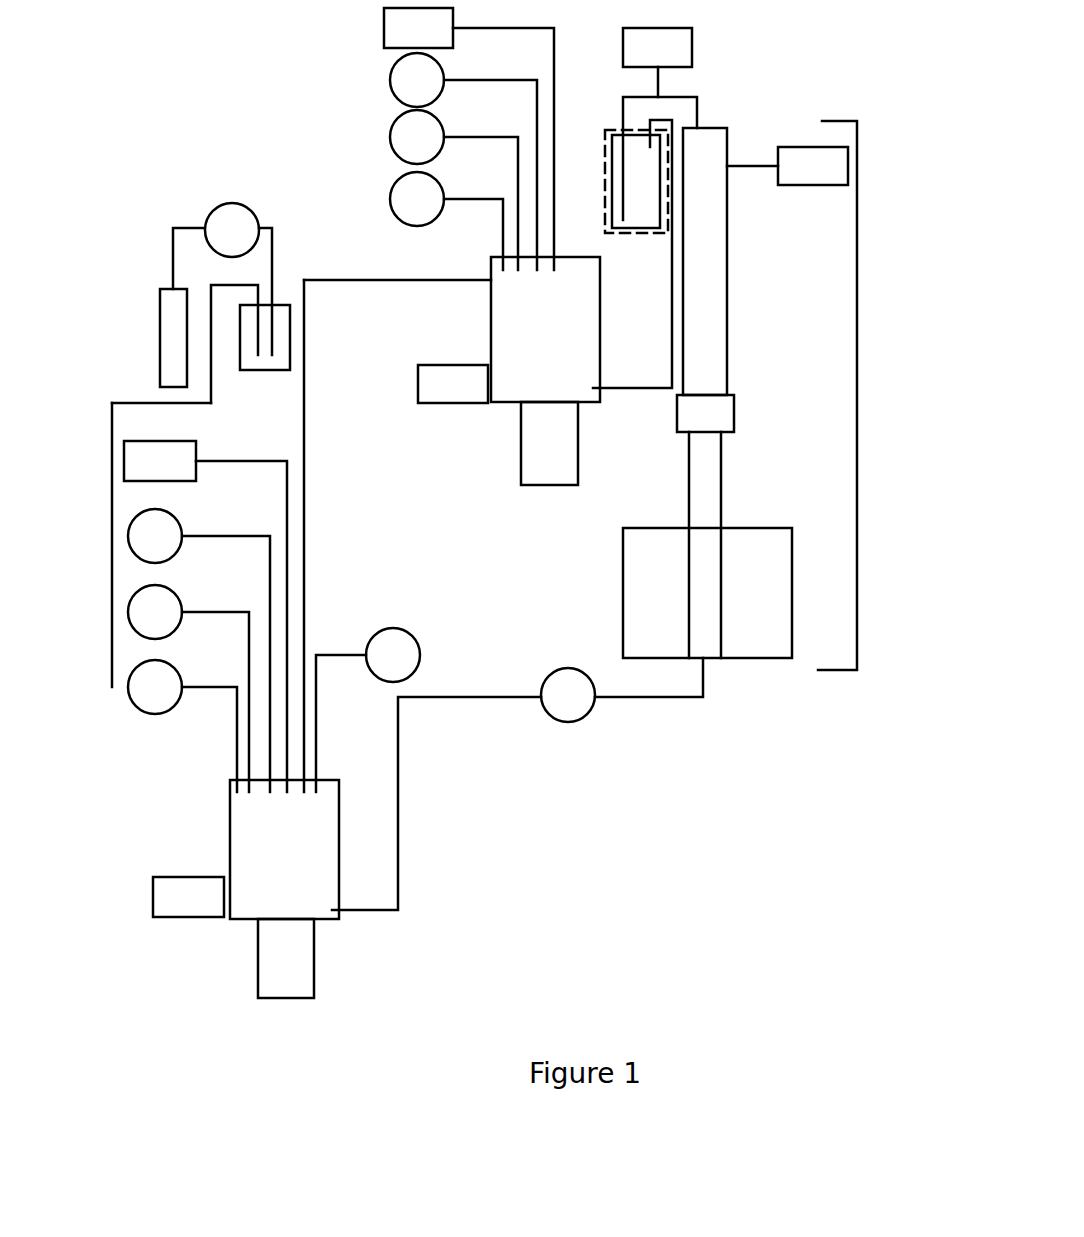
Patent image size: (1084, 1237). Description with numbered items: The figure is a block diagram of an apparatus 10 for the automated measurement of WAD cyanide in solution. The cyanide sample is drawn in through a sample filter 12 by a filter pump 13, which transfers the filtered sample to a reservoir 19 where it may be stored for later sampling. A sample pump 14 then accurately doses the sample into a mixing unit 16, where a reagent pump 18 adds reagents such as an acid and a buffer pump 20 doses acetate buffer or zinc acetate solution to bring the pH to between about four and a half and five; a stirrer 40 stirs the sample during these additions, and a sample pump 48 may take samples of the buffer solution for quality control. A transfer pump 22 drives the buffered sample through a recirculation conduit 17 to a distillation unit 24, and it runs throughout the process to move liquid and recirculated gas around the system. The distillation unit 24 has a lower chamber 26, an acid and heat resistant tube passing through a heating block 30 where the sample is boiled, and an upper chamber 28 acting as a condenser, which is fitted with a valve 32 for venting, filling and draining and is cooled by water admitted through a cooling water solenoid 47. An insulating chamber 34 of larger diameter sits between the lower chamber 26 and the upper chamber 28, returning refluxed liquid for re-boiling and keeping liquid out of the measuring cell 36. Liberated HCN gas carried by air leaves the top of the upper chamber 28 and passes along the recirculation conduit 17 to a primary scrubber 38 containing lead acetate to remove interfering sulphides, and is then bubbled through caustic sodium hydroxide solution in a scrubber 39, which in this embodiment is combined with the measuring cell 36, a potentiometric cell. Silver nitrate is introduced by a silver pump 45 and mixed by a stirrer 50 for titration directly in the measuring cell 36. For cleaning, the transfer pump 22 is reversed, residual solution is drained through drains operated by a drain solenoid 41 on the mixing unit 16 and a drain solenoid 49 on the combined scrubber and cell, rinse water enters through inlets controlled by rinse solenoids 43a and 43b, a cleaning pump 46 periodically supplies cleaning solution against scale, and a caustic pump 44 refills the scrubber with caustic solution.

The apparatus 10 is at (186, 97).
The sample filter 12 is at (182, 307).
The filter pump 13 is at (238, 279).
The sample pump 14 is at (182, 726).
The mixing unit 16 is at (284, 849).
The recirculation conduit 17 is at (363, 273).
The reagent pump 18 is at (199, 650).
The reservoir 19 is at (283, 355).
The buffer pump 20 is at (188, 688).
The transfer pump 22 is at (517, 784).
The distillation unit 24 is at (857, 395).
The lower chamber 26 is at (705, 545).
The upper chamber 28 is at (705, 261).
The heating block 30 is at (707, 593).
The valve 32 is at (657, 62).
The insulating chamber 34 is at (705, 413).
The measuring cell 36 is at (545, 329).
The primary scrubber 38 is at (651, 165).
The scrubber 39 is at (545, 329).
The stirrer 40 is at (286, 958).
The drain solenoid 41 is at (188, 897).
The rinse solenoid 43a is at (205, 616).
The rinse solenoid 43b is at (469, 139).
The caustic pump 44 is at (463, 161).
The silver pump 45 is at (454, 190).
The cleaning pump 46 is at (446, 221).
The cooling water solenoid 47 is at (787, 166).
The sample pump 48 is at (368, 710).
The drain solenoid 49 is at (453, 384).
The stirrer 50 is at (549, 443).